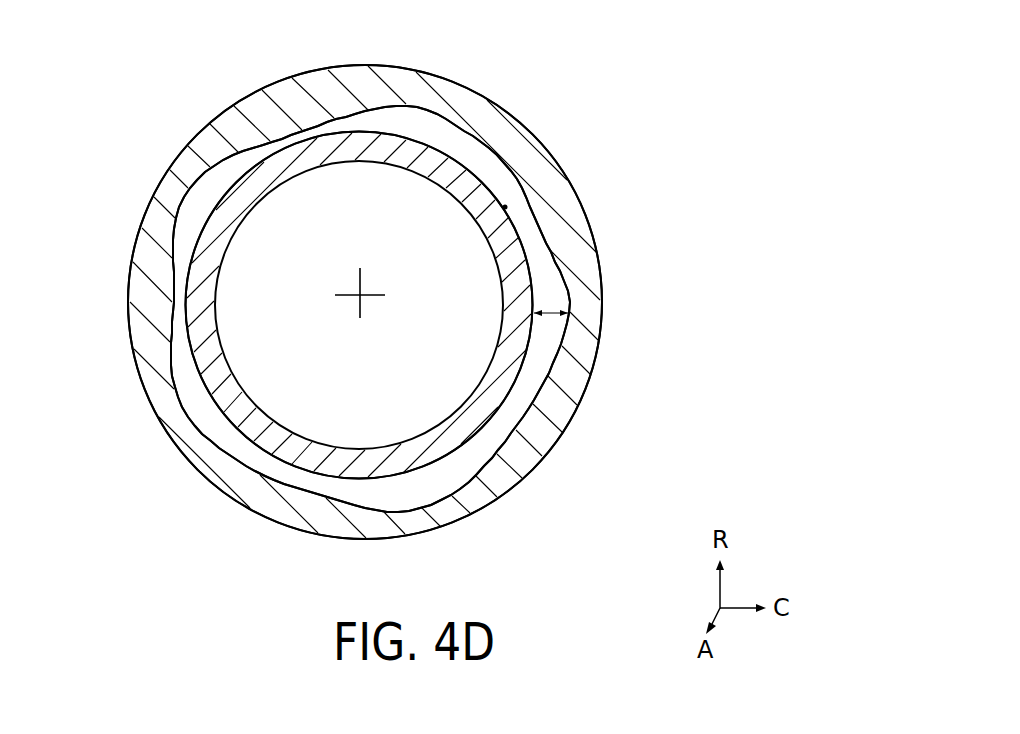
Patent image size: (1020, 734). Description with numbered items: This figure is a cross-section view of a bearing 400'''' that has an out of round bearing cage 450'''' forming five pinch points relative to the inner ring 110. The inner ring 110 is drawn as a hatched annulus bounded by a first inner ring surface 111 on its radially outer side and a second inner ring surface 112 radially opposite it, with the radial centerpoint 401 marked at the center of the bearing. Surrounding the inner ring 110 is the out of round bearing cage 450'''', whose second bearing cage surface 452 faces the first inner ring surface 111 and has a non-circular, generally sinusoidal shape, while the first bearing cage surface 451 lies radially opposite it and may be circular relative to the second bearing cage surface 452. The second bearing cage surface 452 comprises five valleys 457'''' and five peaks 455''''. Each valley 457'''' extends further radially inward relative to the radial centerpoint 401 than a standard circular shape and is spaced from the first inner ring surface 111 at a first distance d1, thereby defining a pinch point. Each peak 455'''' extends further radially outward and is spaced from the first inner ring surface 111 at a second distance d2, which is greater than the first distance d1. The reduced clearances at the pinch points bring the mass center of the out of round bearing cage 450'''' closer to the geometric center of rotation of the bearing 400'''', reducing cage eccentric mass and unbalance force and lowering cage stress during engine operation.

The bearing 400'''' is at (433, 297).
The out of round bearing cage 450'''' is at (342, 262).
The peak 455'''' is at (400, 308).
The valley 457'''' is at (355, 308).
The first bearing cage surface 451 is at (132, 341).
The second bearing cage surface 452 is at (165, 375).
The radial centerpoint 401 is at (357, 290).
The inner ring 110 is at (468, 402).
The first inner ring surface 111 is at (205, 352).
The second inner ring surface 112 is at (240, 381).
The first distance d1 is at (505, 205).
The second distance d2 is at (600, 306).